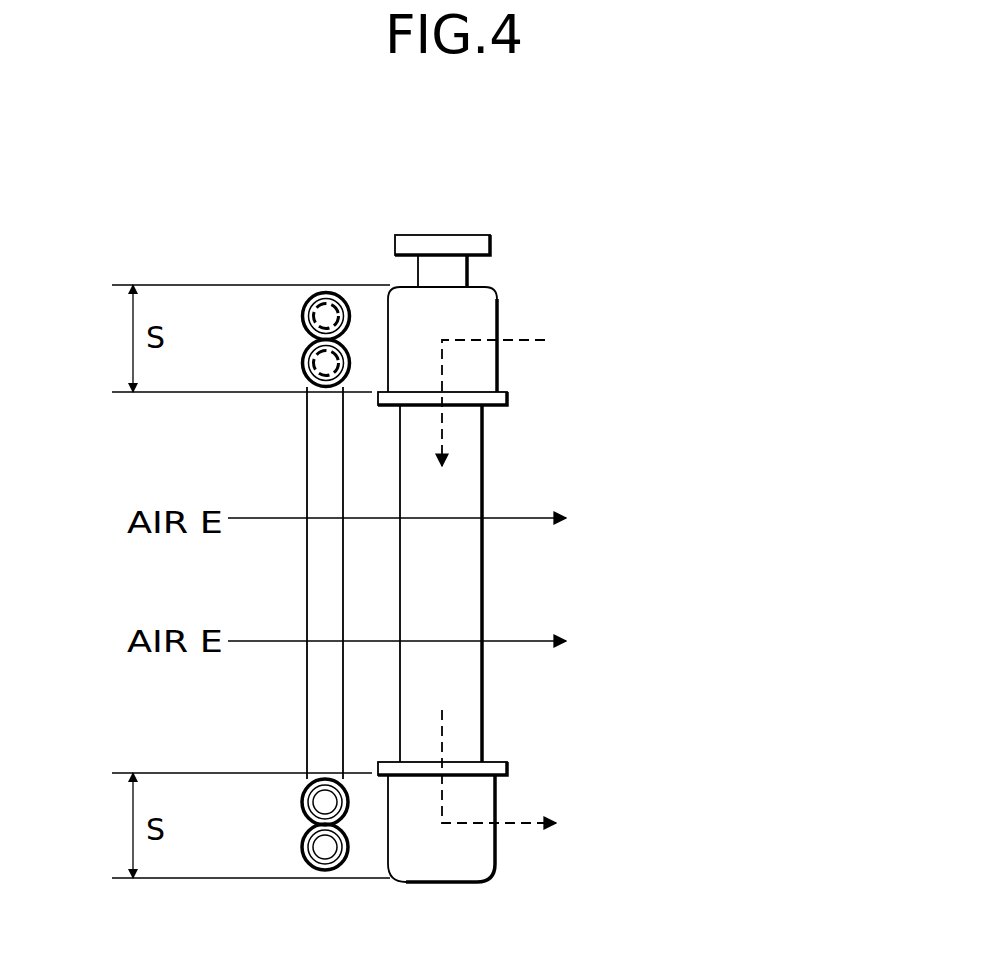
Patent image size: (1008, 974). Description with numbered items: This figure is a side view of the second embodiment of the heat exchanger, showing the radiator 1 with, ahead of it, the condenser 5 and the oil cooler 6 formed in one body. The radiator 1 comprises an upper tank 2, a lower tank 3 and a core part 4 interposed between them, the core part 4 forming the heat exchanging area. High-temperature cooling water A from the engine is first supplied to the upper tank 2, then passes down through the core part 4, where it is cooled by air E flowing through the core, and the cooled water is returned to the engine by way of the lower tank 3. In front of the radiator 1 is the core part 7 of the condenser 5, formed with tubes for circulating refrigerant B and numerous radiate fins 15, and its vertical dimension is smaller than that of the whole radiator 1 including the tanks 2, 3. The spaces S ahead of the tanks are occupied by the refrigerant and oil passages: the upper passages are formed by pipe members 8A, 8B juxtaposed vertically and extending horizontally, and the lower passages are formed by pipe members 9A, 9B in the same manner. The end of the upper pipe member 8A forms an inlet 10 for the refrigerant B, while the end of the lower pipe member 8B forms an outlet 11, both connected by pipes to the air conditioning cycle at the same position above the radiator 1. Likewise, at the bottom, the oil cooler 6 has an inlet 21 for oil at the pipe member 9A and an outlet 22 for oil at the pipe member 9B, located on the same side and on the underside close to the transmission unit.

The radiator 1 is at (507, 247).
The upper tank 2 is at (500, 313).
The lower tank 3 is at (496, 843).
The core part 4 is at (483, 545).
The condenser 5 is at (216, 447).
The oil cooler 6 is at (221, 584).
The core part 7 is at (306, 580).
The fin 15 is at (325, 583).
The pipe member 8A is at (343, 295).
The pipe member 8B is at (298, 352).
The pipe member 9A is at (301, 806).
The pipe member 9B is at (347, 869).
The inlet 10 is at (312, 290).
The outlet 11 is at (303, 372).
The inlet 21 is at (306, 793).
The outlet 22 is at (320, 864).